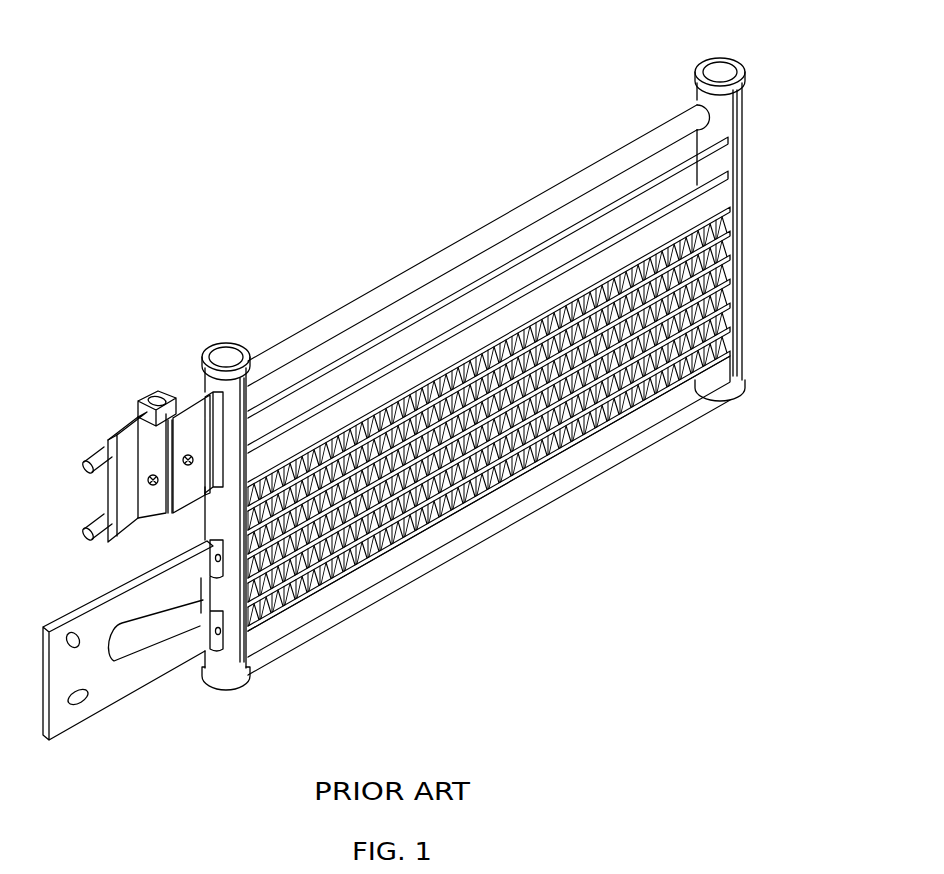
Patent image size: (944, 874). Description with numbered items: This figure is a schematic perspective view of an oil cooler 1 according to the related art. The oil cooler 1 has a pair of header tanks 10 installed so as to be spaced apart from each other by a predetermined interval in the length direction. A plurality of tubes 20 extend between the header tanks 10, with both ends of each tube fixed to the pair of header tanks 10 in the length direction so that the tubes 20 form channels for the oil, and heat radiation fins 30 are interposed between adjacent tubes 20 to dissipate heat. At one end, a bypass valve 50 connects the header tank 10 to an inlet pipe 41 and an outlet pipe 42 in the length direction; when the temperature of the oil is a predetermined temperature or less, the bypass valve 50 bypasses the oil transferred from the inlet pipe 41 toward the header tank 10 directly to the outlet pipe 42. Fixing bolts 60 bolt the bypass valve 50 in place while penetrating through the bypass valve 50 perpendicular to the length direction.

The oil cooler 1 is at (359, 204).
The header tank 10 is at (717, 66).
The tube 20 is at (420, 502).
The heat radiation fin 30 is at (480, 470).
The inlet pipe 41 is at (94, 460).
The outlet pipe 42 is at (94, 527).
The bypass valve 50 is at (117, 398).
The fixing bolt 60 is at (159, 400).